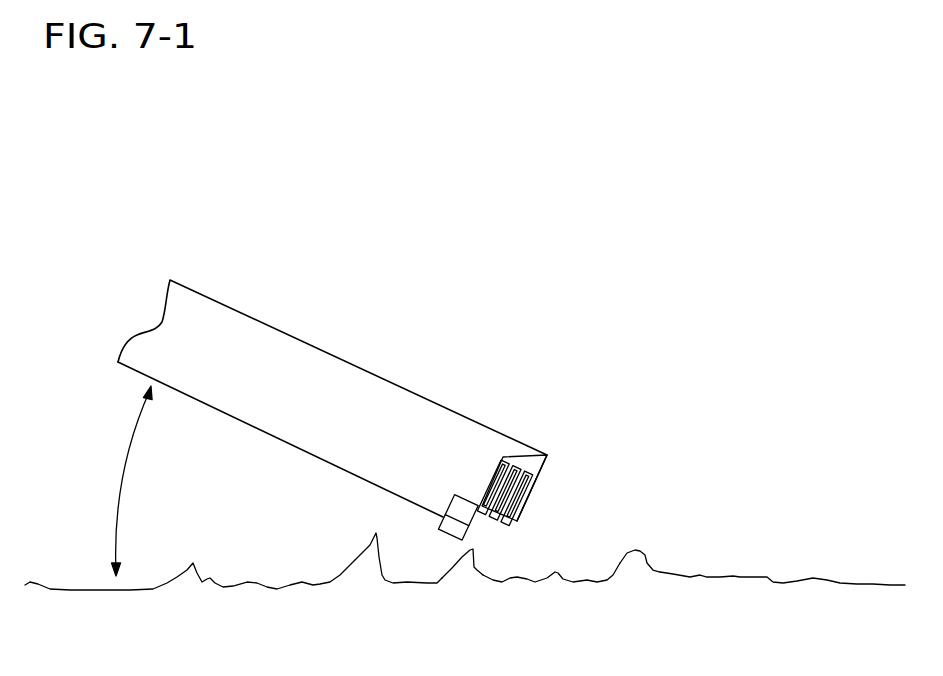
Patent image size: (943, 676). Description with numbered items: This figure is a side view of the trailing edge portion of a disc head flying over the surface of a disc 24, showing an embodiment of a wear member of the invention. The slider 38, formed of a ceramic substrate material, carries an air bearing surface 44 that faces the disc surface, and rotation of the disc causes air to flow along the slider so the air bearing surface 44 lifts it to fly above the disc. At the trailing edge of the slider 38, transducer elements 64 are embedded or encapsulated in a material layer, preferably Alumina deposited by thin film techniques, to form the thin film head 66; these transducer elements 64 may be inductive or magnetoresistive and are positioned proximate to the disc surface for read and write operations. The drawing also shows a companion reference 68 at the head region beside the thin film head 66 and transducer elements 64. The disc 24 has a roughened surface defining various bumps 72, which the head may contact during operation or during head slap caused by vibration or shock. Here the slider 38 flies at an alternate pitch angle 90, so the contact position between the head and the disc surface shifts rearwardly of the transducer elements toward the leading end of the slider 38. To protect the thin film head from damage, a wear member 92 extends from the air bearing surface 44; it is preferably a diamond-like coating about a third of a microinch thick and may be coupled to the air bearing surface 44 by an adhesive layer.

The slider 38 is at (397, 345).
The air bearing surface 44 is at (208, 406).
The thin film head 66 is at (534, 418).
The transducer elements 64 is at (515, 482).
The pin terminals 68 is at (528, 492).
The wear member 92 is at (448, 532).
The disc 24 is at (740, 568).
The bumps 72 is at (482, 552).
The pitch angle 90 is at (120, 480).